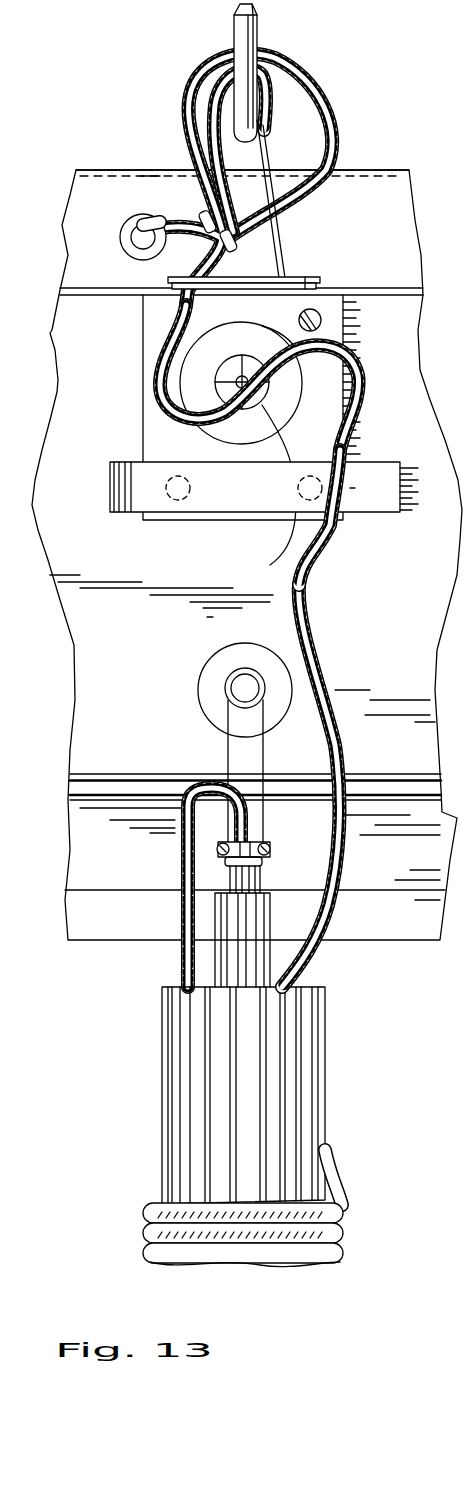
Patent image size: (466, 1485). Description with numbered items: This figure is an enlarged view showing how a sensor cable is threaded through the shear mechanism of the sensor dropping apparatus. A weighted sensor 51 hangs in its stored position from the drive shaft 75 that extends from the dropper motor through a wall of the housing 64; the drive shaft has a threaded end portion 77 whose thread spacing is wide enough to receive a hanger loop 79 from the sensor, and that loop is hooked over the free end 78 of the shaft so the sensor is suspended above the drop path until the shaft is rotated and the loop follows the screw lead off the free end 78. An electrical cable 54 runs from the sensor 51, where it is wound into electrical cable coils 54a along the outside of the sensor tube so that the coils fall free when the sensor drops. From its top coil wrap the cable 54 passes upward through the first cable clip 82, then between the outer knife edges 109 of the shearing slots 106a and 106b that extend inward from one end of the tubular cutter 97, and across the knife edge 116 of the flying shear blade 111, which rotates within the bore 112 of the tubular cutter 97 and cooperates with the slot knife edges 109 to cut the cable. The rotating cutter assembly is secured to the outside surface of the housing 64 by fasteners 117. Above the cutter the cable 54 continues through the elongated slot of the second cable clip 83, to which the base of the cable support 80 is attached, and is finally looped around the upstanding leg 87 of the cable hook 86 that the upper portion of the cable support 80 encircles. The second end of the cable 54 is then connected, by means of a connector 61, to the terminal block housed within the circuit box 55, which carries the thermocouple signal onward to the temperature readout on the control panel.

The sensor 51 is at (195, 1057).
The electrical cable 54 is at (324, 115).
The electrical cable coils 54a is at (292, 1265).
The circuit box 55 is at (130, 180).
The connector 61 is at (125, 236).
The housing 64 is at (100, 633).
The drive shaft 75 is at (220, 660).
The threaded end portion 77 is at (252, 672).
The free end 78 is at (238, 692).
The hanger loop 79 is at (222, 762).
The cable support 80 is at (282, 250).
The first cable clip 82 is at (222, 495).
The second cable clip 83 is at (290, 282).
The cable hook 86 is at (148, 143).
The upstanding leg 87 is at (238, 32).
The tubular cutter 97 is at (348, 446).
The shearing slot 106a is at (213, 440).
The shearing slot 106b is at (270, 335).
The knife edge 109 is at (322, 392).
The flying shear blade 111 is at (220, 365).
The bore 112 is at (268, 496).
The knife edge 116 is at (250, 400).
The fasteners 117 is at (322, 318).